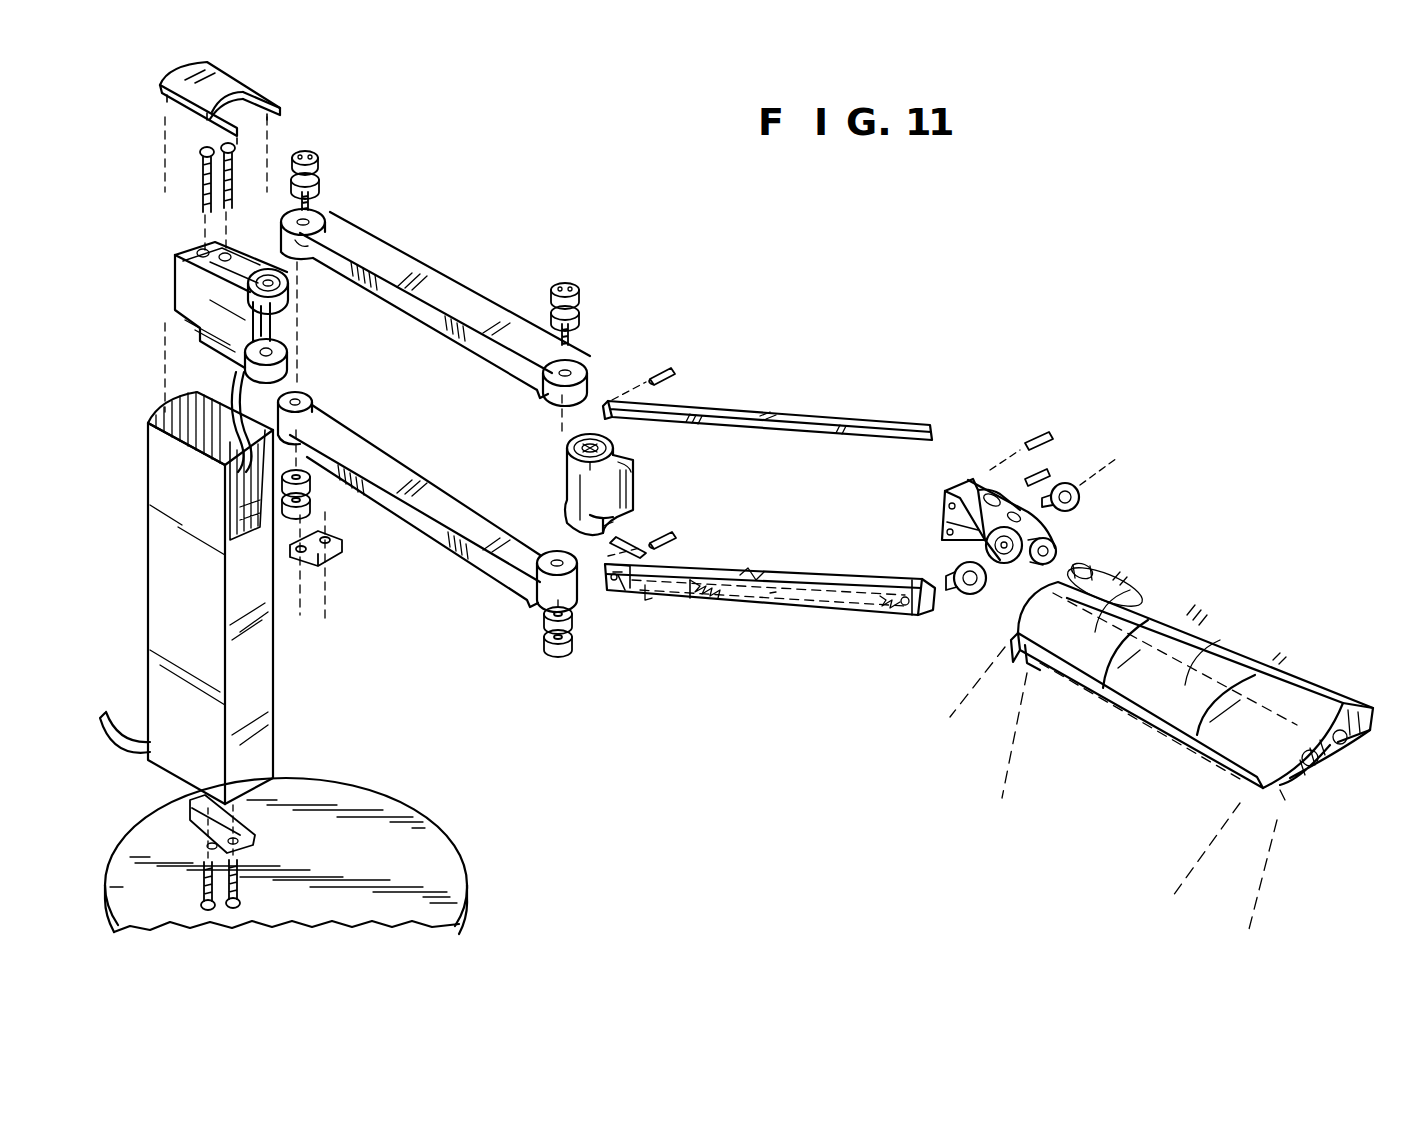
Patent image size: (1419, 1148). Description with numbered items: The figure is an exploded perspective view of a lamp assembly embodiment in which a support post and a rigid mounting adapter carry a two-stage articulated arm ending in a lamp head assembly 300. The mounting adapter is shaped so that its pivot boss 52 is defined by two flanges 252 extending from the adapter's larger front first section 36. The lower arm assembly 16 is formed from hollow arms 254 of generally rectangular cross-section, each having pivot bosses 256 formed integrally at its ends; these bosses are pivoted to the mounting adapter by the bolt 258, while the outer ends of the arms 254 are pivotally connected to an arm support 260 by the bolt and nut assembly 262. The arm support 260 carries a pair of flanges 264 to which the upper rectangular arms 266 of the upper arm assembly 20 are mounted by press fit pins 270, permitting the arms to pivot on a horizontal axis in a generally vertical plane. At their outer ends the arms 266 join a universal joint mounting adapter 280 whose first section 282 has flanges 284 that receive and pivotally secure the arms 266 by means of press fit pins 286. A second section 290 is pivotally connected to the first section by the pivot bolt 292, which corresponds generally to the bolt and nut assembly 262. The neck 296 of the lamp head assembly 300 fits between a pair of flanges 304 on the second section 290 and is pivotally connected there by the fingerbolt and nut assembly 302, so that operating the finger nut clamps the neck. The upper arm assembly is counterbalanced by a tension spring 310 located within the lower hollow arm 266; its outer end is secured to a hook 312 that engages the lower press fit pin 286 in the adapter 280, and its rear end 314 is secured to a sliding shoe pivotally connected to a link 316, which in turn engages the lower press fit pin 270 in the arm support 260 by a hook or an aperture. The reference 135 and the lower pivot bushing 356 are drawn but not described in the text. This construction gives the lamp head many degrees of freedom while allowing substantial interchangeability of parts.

The lower arm assembly 16 is at (427, 217).
The upper arm assembly 20 is at (747, 393).
The first section 36 is at (247, 256).
The pivot boss 52 is at (295, 322).
The lamp head assembly 135 is at (857, 728).
The flanges 252 is at (291, 296).
The hollow arms 254 is at (448, 293).
The pivot bosses 256 is at (305, 218).
The bolt 258 is at (304, 150).
The arm support 260 is at (632, 480).
The bolt and nut assembly 262 is at (572, 283).
The flanges 264 is at (630, 456).
The upper rectangular arms 266 is at (803, 413).
The press fit pins 270 is at (663, 352).
The universal joint mounting adapter 280 is at (1017, 498).
The first section 282 is at (973, 480).
The flanges 284 is at (947, 489).
The press fit pins 286 is at (1040, 455).
The second section 290 is at (1012, 585).
The pivot bolt 292 is at (944, 525).
The neck 296 is at (1058, 558).
The lamp head assembly 300 is at (1234, 620).
The fingerbolt and nut assembly 302 is at (948, 577).
The flanges 304 is at (1060, 530).
The tension spring 310 is at (833, 605).
The hook 312 is at (913, 617).
The rear end 314 is at (695, 600).
The link 316 is at (630, 580).
The pivot bushing 356 is at (313, 398).